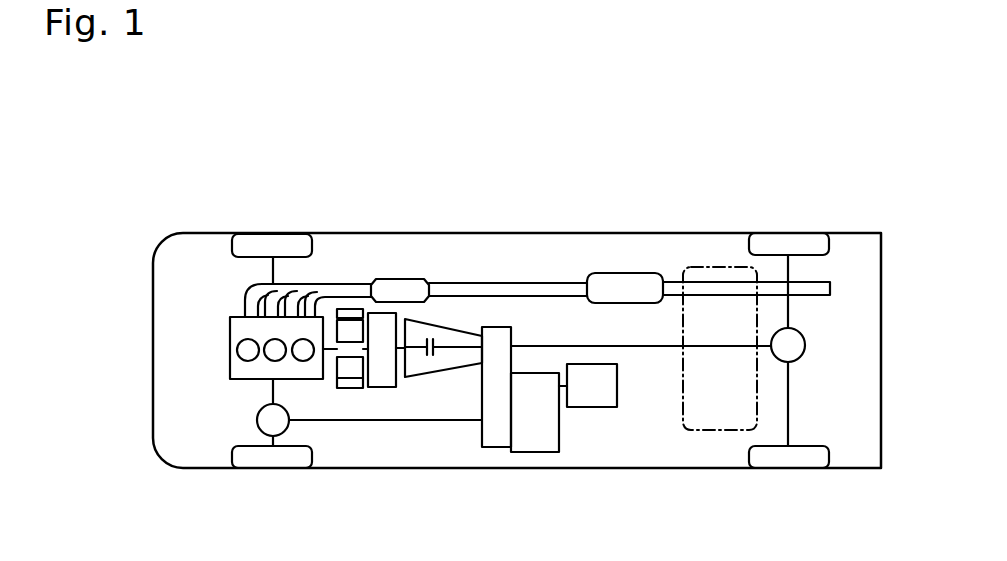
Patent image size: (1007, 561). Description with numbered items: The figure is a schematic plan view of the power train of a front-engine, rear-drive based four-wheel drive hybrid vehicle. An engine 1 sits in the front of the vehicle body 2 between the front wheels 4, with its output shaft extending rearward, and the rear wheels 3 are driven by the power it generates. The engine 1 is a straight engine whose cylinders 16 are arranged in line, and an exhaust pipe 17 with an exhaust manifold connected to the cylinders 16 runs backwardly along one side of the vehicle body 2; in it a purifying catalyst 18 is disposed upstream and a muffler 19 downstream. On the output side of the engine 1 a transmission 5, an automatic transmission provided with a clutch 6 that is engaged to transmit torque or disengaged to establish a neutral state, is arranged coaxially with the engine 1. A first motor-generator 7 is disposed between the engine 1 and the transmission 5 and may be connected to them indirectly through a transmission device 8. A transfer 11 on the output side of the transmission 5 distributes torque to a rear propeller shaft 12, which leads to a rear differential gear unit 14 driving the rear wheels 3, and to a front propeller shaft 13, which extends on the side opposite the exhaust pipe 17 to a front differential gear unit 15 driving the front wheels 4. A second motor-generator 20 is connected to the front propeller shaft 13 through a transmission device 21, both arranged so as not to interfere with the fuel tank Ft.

The engine 1 is at (237, 382).
The vehicle body 2 is at (700, 468).
The rear wheels 3 is at (807, 233).
The front wheels 4 is at (267, 462).
The transmission 5 is at (460, 327).
The clutch 6 is at (445, 355).
The first motor-generator 7 is at (347, 388).
The transmission device 8 is at (387, 387).
The transfer 11 is at (502, 327).
The rear propeller shaft 12 is at (650, 347).
The front propeller shaft 13 is at (462, 421).
The rear differential gear unit 14 is at (806, 344).
The front differential gear unit 15 is at (257, 421).
The cylinders 16 is at (237, 350).
The exhaust pipe 17 is at (564, 261).
The purifying catalyst 18 is at (400, 278).
The muffler 19 is at (637, 273).
The second motor-generator 20 is at (597, 407).
The transmission device 21 is at (540, 452).
The fuel tank Ft is at (758, 410).